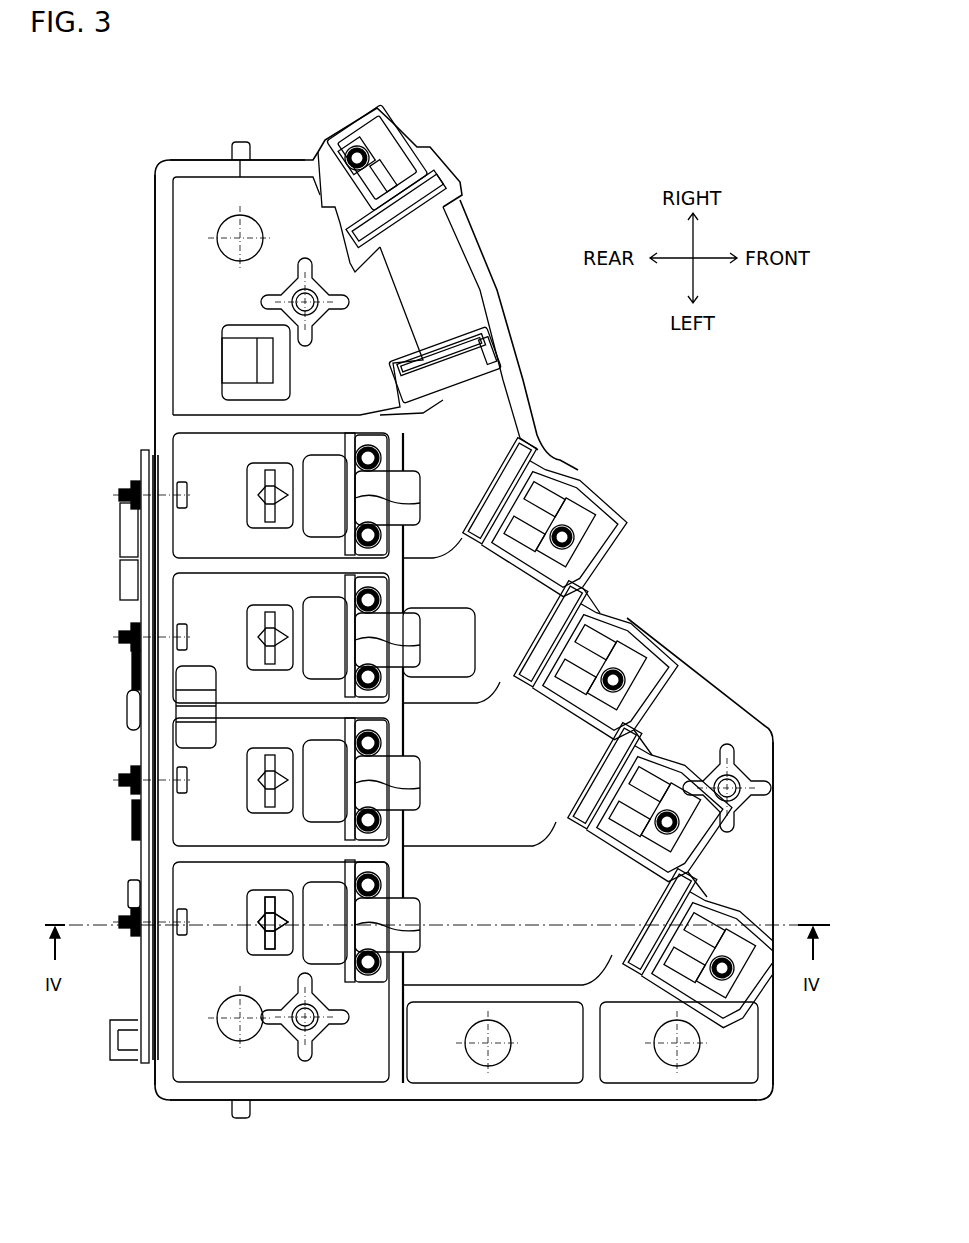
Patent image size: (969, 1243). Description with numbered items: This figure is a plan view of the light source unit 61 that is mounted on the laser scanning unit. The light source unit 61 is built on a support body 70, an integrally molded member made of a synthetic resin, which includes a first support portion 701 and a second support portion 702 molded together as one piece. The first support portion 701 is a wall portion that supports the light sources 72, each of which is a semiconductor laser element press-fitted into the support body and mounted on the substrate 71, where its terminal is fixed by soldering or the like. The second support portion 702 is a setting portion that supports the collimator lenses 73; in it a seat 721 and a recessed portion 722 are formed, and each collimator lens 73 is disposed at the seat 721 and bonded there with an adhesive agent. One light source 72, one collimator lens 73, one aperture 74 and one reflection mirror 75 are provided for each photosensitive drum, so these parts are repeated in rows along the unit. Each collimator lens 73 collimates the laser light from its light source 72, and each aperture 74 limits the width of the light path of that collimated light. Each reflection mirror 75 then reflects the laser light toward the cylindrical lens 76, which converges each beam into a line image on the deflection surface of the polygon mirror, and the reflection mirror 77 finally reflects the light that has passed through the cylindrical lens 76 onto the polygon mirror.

The light source unit 61 is at (80, 237).
The support body 70 is at (373, 1100).
The first support portion 701 is at (180, 1052).
The second support portion 702 is at (277, 1068).
The substrate 71 is at (140, 990).
The light source 72 is at (190, 921).
The collimator lens 73 is at (273, 953).
The aperture 74 is at (392, 920).
The reflection mirror 75 is at (693, 883).
The cylindrical lens 76 is at (488, 355).
The reflection mirror 77 is at (415, 200).
The seat 721 is at (282, 912).
The recessed portion 722 is at (256, 899).